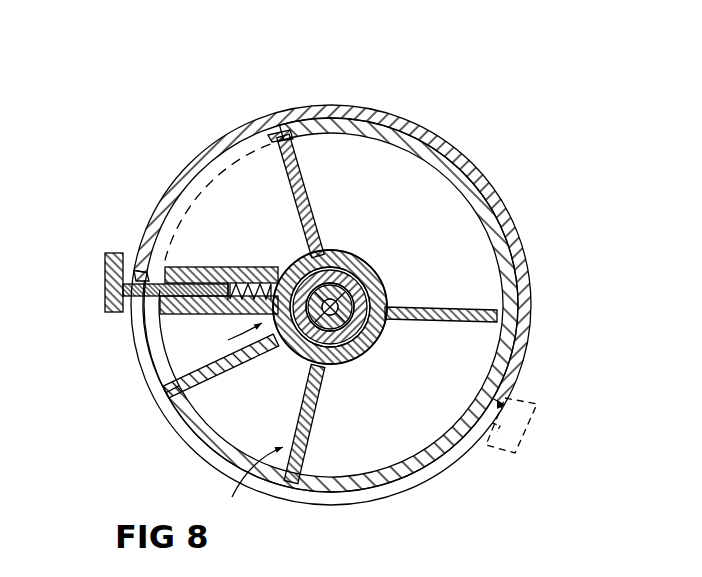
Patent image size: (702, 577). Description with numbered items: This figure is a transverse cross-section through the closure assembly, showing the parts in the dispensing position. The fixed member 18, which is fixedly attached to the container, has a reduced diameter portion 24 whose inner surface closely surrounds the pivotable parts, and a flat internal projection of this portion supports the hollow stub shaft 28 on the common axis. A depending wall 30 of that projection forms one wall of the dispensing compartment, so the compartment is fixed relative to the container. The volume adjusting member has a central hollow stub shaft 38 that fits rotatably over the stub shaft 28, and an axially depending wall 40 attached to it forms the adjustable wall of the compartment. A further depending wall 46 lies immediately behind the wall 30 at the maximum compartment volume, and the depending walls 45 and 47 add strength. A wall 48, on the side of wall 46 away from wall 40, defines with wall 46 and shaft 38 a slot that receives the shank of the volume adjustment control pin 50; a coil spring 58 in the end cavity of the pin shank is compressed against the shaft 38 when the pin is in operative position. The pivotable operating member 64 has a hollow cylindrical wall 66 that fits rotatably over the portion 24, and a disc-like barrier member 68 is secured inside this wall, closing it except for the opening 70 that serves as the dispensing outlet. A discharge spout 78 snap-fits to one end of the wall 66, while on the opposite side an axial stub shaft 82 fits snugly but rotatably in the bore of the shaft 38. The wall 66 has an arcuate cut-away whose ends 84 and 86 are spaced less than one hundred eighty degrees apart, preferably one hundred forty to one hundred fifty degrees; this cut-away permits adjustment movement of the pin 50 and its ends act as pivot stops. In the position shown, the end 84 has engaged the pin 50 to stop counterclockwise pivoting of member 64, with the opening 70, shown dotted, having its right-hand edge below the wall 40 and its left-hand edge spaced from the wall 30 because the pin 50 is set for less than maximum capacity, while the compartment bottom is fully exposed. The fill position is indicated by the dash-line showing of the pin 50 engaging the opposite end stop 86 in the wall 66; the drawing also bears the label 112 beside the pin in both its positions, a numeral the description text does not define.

The fixed member 18 is at (510, 272).
The reduced diameter portion 24 is at (440, 168).
The hollow stub shaft 28 is at (353, 360).
The depending wall 30 is at (220, 373).
The central hollow stub shaft 38 is at (288, 356).
The axially depending wall 40 is at (310, 428).
The depending wall 45 is at (441, 306).
The depending wall 46 is at (191, 314).
The depending wall 47 is at (300, 195).
The wall 48 is at (195, 268).
The dispensing compartment volume adjustment control pin 50 is at (155, 304).
The coil spring 58 is at (262, 283).
The pivotable closure member operating assembly 64 is at (508, 203).
The hollow cylindrical wall 66 is at (165, 197).
The disc-like barrier member 68 is at (153, 322).
The opening 70 is at (240, 421).
The discharge spout 78 is at (170, 365).
The axial stub shaft 82 is at (342, 276).
The end of cut-away arcuate portion 84 is at (137, 270).
The end of cut-away arcuate portion 86 is at (512, 406).
The actuator block 112 is at (108, 262).